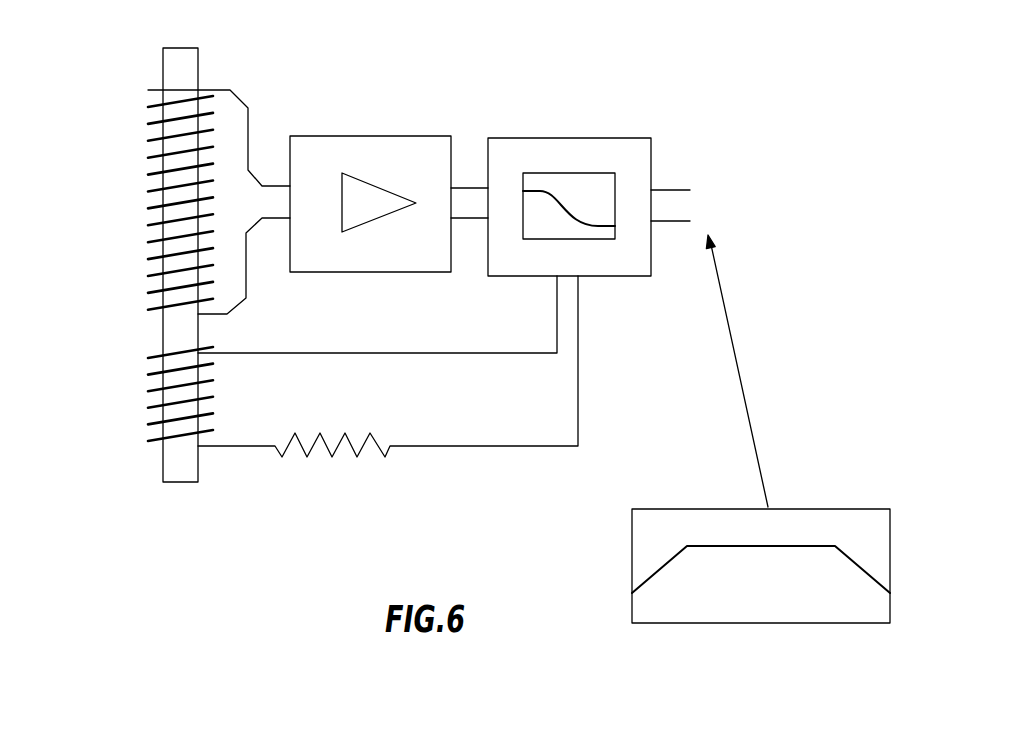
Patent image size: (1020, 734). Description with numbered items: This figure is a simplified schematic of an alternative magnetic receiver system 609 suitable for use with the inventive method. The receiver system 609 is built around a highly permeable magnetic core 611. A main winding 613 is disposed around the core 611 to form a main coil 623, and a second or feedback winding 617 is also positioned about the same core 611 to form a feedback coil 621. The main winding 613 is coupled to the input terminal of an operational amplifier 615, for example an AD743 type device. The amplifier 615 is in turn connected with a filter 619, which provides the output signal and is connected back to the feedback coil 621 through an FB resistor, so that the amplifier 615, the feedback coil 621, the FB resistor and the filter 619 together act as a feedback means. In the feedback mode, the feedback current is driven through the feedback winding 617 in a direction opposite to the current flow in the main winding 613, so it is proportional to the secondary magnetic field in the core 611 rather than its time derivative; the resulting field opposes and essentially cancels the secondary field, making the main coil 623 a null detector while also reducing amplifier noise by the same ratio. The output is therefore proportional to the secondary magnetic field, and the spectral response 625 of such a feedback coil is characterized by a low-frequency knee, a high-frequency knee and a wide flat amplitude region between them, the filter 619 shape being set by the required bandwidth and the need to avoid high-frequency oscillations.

The magnetic receiver system 609 is at (740, 130).
The magnetic core 611 is at (200, 62).
The main winding 613 is at (160, 90).
The operational amplifier 615 is at (385, 136).
The feedback winding 617 is at (150, 441).
The filter 619 is at (596, 138).
The feedback coil 621 is at (136, 373).
The main coil 623 is at (121, 143).
The spectral response 625 is at (852, 474).